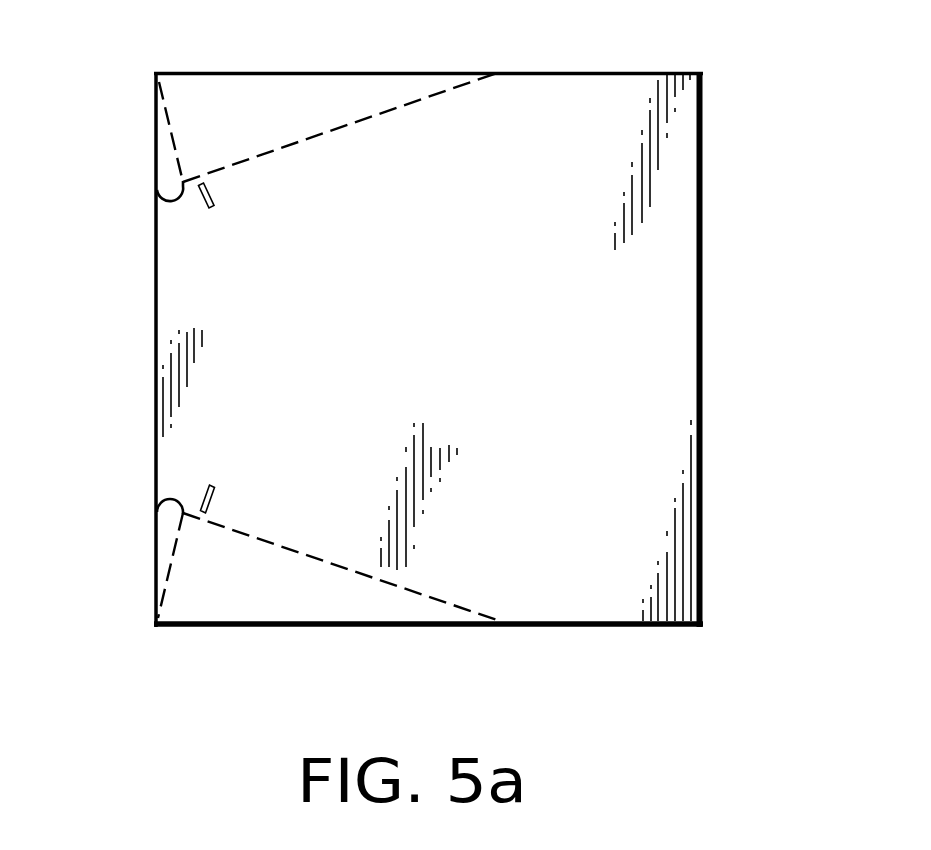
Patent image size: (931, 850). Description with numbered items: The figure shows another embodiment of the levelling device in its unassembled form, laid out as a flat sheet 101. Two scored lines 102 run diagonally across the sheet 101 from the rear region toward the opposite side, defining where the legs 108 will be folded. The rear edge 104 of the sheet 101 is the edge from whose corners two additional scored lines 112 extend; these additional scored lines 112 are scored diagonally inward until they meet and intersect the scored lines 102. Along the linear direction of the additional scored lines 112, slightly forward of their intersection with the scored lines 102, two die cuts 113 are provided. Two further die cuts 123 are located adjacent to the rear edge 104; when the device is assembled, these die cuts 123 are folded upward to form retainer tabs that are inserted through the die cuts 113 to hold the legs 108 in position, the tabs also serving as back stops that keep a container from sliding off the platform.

The sheet 101 is at (652, 260).
The scored lines 102 is at (328, 130).
The rear edge 104 is at (157, 400).
The legs 108 is at (267, 593).
The additional scored lines 112 is at (182, 141).
The die cuts 113 is at (203, 200).
The die cuts 123 is at (177, 497).